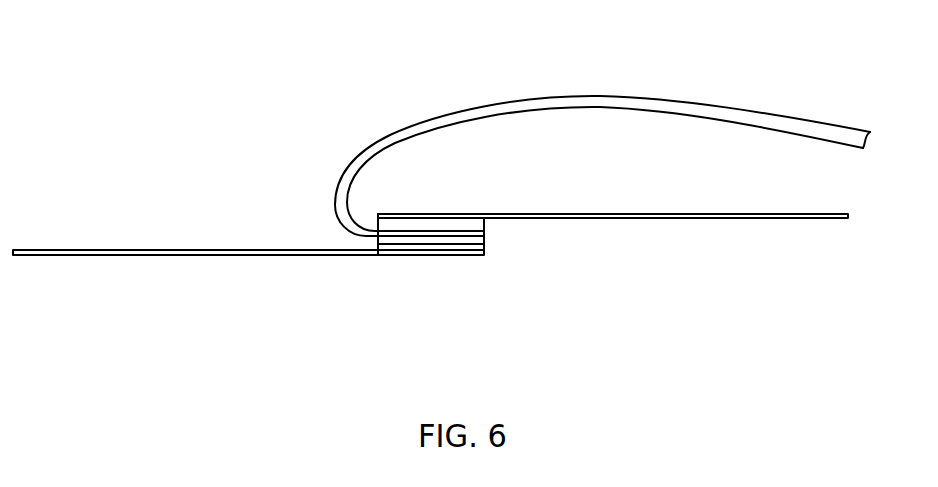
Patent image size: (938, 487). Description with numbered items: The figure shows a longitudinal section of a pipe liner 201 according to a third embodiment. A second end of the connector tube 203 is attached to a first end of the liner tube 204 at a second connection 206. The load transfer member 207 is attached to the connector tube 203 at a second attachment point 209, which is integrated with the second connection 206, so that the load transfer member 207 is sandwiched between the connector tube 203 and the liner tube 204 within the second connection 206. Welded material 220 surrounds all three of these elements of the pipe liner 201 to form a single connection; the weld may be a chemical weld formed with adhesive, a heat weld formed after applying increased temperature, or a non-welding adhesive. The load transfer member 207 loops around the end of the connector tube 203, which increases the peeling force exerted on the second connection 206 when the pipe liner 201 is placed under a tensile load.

The pipe liner 201 is at (239, 42).
The connector tube 203 is at (823, 220).
The liner tube 204 is at (180, 257).
The second connection 206 is at (483, 265).
The load transfer member 207 is at (728, 113).
The second attachment point 209 is at (436, 225).
The welded material 220 is at (378, 245).